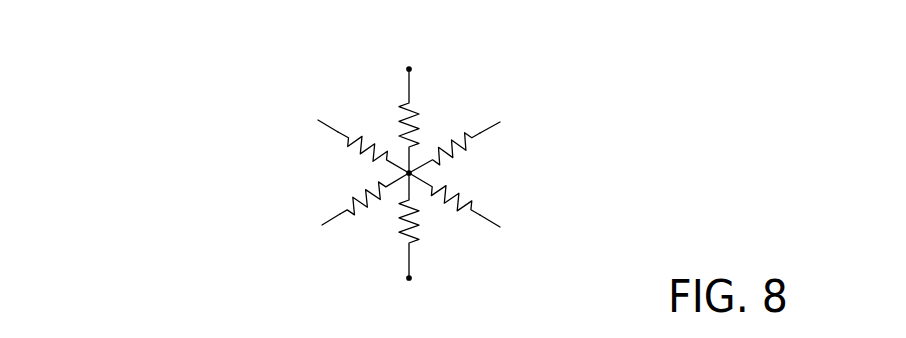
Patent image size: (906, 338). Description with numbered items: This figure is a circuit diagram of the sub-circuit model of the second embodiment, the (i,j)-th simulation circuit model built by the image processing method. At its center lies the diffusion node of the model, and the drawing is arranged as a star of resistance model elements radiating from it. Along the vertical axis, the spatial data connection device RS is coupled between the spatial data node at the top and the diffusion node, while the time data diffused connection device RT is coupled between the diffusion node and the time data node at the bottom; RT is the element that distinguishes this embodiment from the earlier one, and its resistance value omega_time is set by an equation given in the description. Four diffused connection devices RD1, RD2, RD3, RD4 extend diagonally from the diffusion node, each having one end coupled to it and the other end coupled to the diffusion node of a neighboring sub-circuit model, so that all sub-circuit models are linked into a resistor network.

The spatial data connection device RS is at (415, 114).
The time data diffused connection device RT is at (406, 234).
The diffused connection device RD1 is at (359, 140).
The diffused connection device RD2 is at (354, 199).
The diffused connection device RD3 is at (468, 210).
The diffused connection device RD4 is at (467, 147).